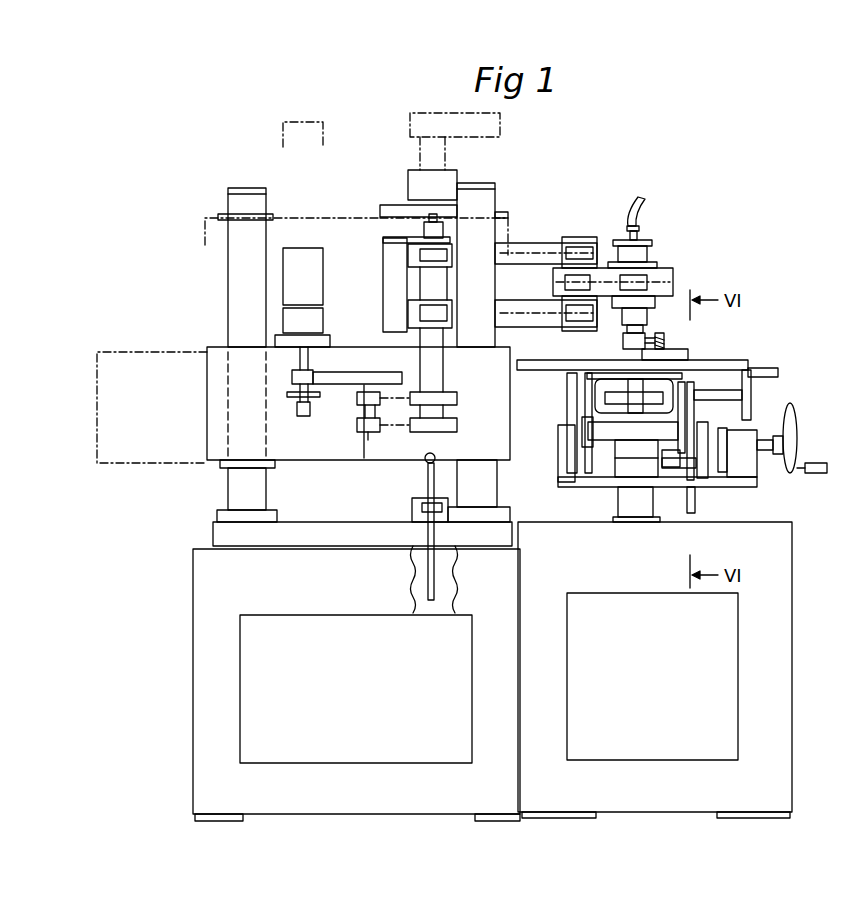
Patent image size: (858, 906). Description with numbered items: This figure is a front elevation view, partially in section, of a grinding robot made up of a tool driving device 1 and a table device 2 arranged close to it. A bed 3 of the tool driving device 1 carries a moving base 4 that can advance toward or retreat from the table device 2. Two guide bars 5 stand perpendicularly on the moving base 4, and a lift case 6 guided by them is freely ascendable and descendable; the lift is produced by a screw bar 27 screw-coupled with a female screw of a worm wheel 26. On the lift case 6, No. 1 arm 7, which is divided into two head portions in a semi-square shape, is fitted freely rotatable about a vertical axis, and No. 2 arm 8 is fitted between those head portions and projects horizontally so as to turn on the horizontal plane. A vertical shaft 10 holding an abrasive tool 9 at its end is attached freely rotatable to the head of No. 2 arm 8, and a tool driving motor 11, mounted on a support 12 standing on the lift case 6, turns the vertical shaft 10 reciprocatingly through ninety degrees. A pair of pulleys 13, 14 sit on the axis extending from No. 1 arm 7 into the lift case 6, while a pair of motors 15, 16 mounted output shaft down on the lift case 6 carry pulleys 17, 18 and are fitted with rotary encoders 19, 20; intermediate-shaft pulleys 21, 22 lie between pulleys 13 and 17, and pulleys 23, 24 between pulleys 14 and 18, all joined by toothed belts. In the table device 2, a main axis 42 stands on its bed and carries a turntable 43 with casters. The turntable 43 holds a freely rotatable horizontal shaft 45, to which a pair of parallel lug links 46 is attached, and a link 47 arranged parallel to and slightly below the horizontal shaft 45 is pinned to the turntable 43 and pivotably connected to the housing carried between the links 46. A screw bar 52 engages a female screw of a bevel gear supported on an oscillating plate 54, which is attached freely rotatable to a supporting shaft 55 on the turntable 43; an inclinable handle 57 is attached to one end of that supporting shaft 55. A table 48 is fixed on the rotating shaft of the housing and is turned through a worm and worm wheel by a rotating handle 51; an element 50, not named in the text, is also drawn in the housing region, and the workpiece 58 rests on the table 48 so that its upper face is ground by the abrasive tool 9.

The tool driving device 1 is at (307, 180).
The table device 2 is at (683, 412).
The bed 3 is at (198, 630).
The moving base 4 is at (214, 533).
The guide bars 5 is at (230, 276).
The lift case 6 is at (207, 378).
The No. 1 arm 7 is at (540, 243).
The No. 2 arm 8 is at (665, 264).
The abrasive tool 9 is at (660, 338).
The vertical shaft 10 is at (623, 340).
The tool driving motor 11 is at (430, 222).
The support 12 is at (385, 266).
The pulley 13 is at (460, 398).
The pulley 14 is at (460, 432).
The motor 15 is at (326, 278).
The motor 16 is at (308, 248).
The pulley 17 is at (266, 397).
The pulley 18 is at (292, 378).
The rotary encoder 19 is at (305, 442).
The rotary encoder 20 is at (300, 417).
The pulley 21 is at (334, 310).
The pulley 22 is at (362, 438).
The pulley 23 is at (356, 372).
The pulley 24 is at (370, 431).
The worm wheel 26 is at (424, 515).
The screw bar 27 is at (436, 579).
The main axis 42 is at (618, 505).
The turntable 43 is at (762, 447).
The horizontal shaft 45 is at (605, 442).
The links 46 is at (700, 414).
The link 47 is at (567, 402).
The table 48 is at (746, 362).
The panel 50 is at (655, 397).
The rotating handle 51 is at (765, 377).
The screw bar 52 is at (695, 500).
The oscillating plate 54 is at (673, 468).
The supporting shaft 55 is at (765, 457).
The inclinable handle 57 is at (792, 428).
The workpiece 58 is at (677, 377).